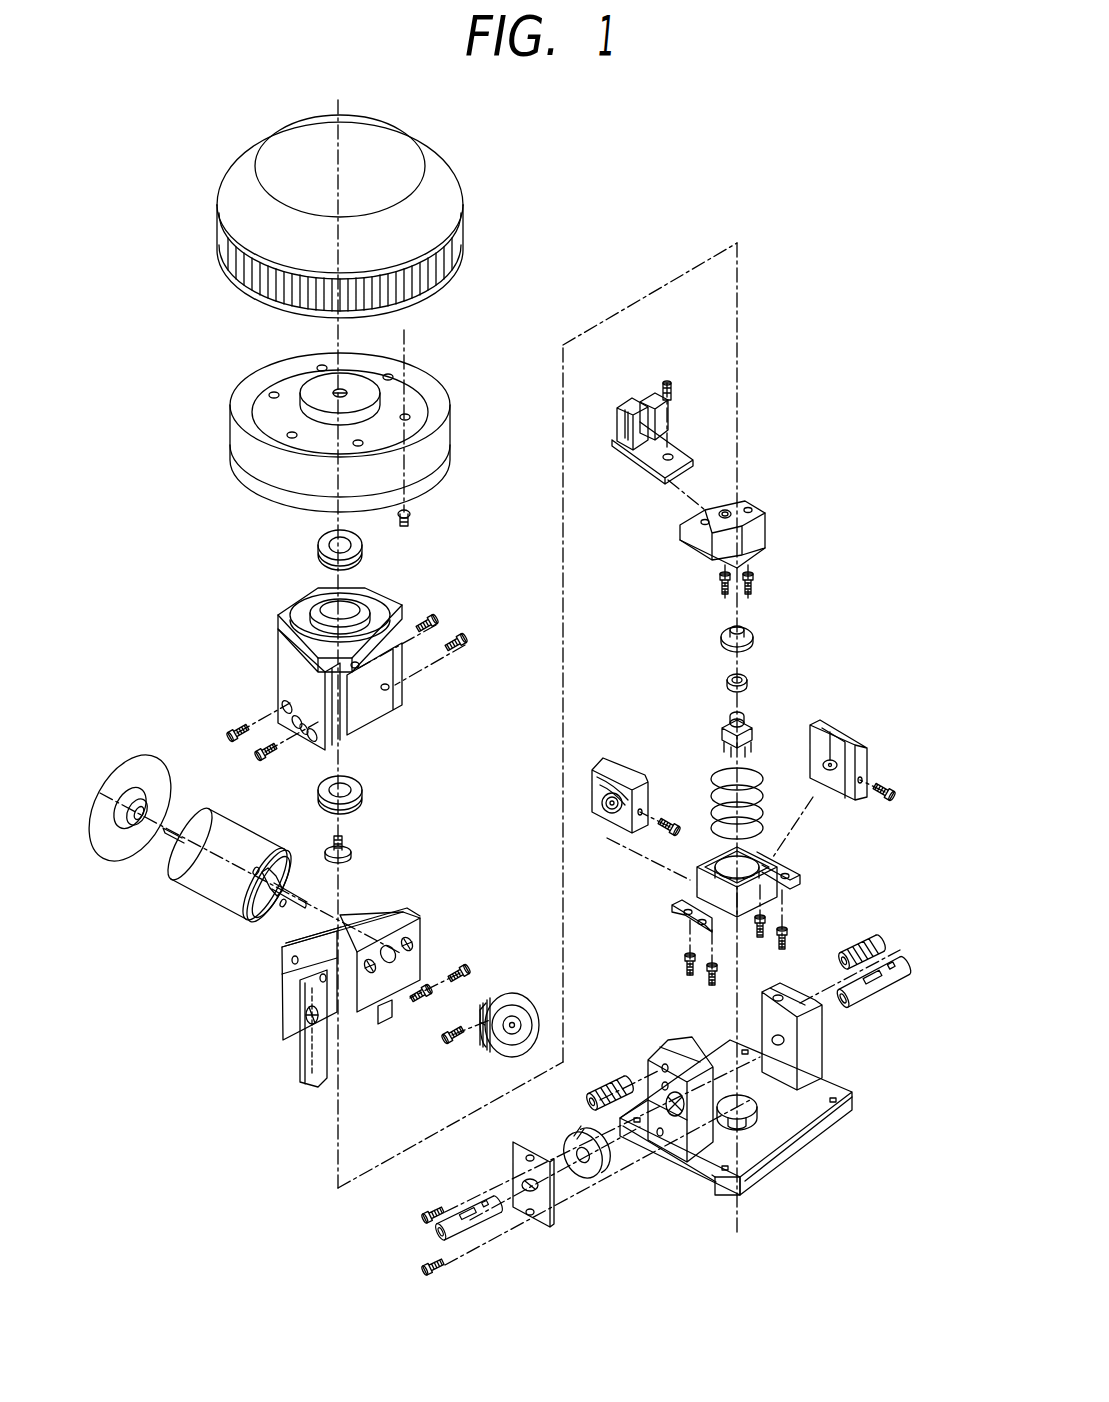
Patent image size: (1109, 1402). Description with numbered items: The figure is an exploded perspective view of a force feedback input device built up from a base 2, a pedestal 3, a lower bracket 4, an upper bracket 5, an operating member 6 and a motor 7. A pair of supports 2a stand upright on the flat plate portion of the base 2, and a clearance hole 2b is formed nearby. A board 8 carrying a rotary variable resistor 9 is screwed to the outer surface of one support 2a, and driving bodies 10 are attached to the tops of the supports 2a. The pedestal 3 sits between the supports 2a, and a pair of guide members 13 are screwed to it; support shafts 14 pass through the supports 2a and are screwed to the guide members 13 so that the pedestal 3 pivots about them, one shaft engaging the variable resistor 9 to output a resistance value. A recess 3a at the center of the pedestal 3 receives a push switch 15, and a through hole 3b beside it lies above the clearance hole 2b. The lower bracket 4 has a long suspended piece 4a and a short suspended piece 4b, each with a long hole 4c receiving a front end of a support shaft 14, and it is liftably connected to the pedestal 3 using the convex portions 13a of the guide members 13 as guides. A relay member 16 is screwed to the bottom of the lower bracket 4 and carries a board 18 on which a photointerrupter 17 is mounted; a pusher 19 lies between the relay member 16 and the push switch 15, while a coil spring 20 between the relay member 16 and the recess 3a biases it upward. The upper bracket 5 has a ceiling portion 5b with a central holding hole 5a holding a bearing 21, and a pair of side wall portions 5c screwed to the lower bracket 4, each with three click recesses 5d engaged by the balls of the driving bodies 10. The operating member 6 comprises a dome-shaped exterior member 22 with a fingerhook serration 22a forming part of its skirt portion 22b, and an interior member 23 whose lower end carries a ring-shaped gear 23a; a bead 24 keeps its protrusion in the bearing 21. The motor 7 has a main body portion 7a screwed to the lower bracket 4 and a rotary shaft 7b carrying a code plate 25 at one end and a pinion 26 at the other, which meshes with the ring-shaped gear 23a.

The base 2 is at (810, 1160).
The supports 2a is at (675, 1040).
The clearance hole 2b is at (723, 1140).
The pedestal 3 is at (795, 873).
The recess 3a is at (775, 858).
The through hole 3b is at (685, 910).
The lower bracket 4 is at (290, 990).
The long suspended piece 4a is at (310, 1080).
The short suspended piece 4b is at (393, 1015).
The long holes 4c is at (300, 1015).
The upper bracket 5 is at (405, 608).
The holding hole 5a is at (355, 600).
The ceiling portion 5b is at (280, 612).
The side wall portions 5c is at (283, 668).
The click recesses 5d is at (303, 740).
The operating member 6 is at (115, 222).
The motor 7 is at (225, 825).
The main body portion 7a is at (225, 900).
The rotary shaft 7b is at (165, 835).
The board 8 is at (540, 1220).
The rotary variable resistor 9 is at (593, 1168).
The driving bodies 10 is at (880, 950).
The guide members 13 is at (600, 770).
The convex portions 13a is at (635, 760).
The support shafts 14 is at (890, 985).
The push switch 15 is at (750, 725).
The relay member 16 is at (763, 532).
The photointerrupter 17 is at (625, 400).
The board 18 is at (645, 470).
The pusher 19 is at (752, 637).
The coil spring 20 is at (712, 800).
The bearing 21 is at (320, 545).
The exterior member 22 is at (215, 242).
The fingerhook serration 22a is at (440, 253).
The skirt portion 22b is at (440, 300).
The interior member 23 is at (240, 420).
The ring-shaped gear 23a is at (440, 480).
The bead 24 is at (355, 850).
The code plate 25 is at (115, 775).
The pinion 26 is at (502, 1000).